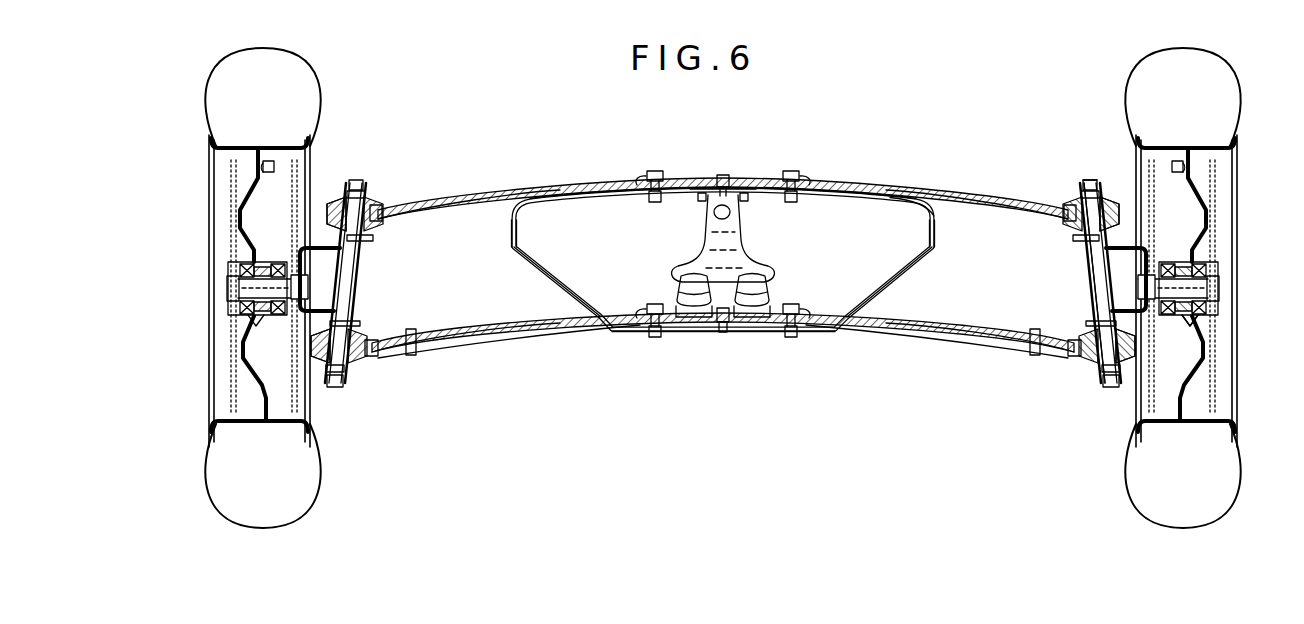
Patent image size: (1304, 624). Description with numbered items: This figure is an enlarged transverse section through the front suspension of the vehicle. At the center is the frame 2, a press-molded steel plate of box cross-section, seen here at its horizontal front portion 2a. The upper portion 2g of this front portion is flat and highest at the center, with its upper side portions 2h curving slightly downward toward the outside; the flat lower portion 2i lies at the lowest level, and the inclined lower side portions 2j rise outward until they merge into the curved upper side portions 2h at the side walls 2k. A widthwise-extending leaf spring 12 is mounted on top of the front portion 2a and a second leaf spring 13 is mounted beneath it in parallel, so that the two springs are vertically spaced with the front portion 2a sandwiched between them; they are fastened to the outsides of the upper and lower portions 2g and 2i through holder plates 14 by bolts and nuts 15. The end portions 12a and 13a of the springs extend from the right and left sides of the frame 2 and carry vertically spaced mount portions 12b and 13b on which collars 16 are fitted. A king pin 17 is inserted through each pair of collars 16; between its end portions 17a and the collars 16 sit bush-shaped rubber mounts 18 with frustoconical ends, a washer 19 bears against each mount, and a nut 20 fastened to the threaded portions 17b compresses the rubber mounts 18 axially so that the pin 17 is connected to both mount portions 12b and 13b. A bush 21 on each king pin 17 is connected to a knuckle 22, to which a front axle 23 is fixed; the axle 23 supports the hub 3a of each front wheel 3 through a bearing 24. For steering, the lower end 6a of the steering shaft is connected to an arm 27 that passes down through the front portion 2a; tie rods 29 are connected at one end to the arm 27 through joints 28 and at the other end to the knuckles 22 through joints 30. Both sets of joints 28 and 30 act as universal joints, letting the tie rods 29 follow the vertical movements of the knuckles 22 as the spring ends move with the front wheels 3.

The frame 2 is at (921, 268).
The horizontal front portion 2a is at (926, 196).
The upper portion 2g is at (690, 190).
The upper side portions 2h is at (552, 190).
The flat lower portion 2i is at (688, 333).
The lower side portions 2j is at (550, 279).
The side walls 2k is at (510, 233).
The front wheels 3 is at (272, 517).
The hub 3a is at (252, 257).
The lower end of steering shaft 6a is at (714, 214).
The leaf spring 12 is at (592, 186).
The end portions 12a is at (463, 203).
The mount portions 12b is at (328, 215).
The leaf spring 13 is at (551, 331).
The end portions 13a is at (431, 347).
The mount portions 13b is at (318, 346).
The holder plates 14 is at (752, 180).
The bolts and nuts 15 is at (653, 172).
The collars 16 is at (386, 213).
The king pin 17 is at (348, 288).
The end portions of pin 17a is at (1210, 322).
The threaded portions 17b is at (1086, 178).
The rubber mounts 18 is at (373, 200).
The washer 19 is at (354, 178).
The nut 20 is at (357, 182).
The bush 21 is at (358, 275).
The knuckle 22 is at (312, 248).
The front axle 23 is at (235, 272).
The bearing 24 is at (228, 289).
The arm 27 is at (740, 252).
The joints 28 is at (680, 290).
The tie rods 29 is at (494, 345).
The joints 30 is at (411, 358).